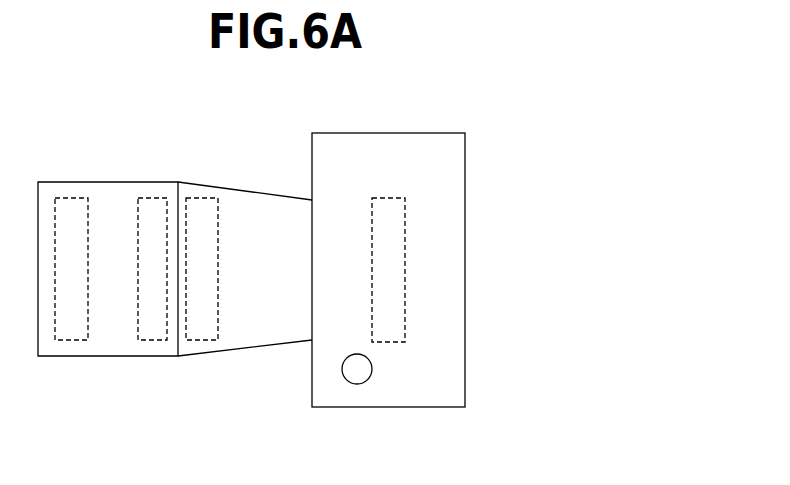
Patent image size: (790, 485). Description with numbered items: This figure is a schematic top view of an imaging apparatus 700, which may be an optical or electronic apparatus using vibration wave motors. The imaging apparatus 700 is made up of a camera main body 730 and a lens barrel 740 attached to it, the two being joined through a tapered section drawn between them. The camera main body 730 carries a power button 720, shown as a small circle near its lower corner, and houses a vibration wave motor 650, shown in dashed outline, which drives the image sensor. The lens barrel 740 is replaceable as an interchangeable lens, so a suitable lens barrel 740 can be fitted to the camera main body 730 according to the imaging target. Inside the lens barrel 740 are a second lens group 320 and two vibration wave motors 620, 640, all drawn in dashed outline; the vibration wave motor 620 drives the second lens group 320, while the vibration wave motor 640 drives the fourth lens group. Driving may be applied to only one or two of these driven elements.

The imaging apparatus 700 is at (313, 96).
The lens barrel 740 is at (103, 195).
The second lens group 320 is at (70, 341).
The vibration wave motor 620 is at (155, 201).
The vibration wave motor 640 is at (200, 203).
The camera main body 730 is at (428, 397).
The vibration wave motor 650 is at (405, 221).
The power button 720 is at (359, 374).